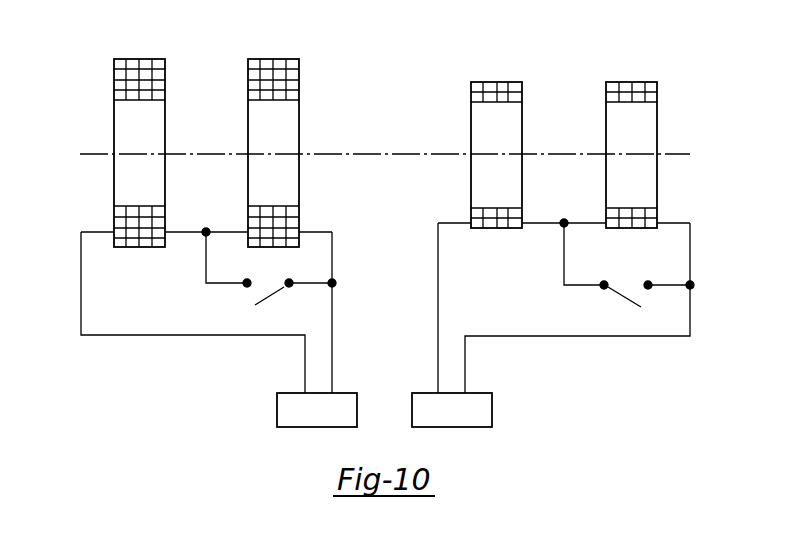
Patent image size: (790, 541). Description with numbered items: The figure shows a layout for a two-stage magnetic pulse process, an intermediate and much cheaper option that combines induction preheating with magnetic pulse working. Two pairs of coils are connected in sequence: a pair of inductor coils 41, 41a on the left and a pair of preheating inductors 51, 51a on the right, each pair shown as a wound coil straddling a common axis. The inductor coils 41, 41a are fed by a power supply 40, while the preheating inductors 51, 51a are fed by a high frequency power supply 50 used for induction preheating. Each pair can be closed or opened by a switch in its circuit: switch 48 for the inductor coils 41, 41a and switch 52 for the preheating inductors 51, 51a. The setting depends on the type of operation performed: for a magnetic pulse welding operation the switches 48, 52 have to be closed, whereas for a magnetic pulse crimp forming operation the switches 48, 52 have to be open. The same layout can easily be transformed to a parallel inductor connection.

The inductor coil 41 is at (133, 64).
The inductor coil 41a is at (267, 64).
The preheating inductor 51 is at (490, 88).
The preheating inductor 51a is at (624, 88).
The switch 48 is at (276, 294).
The switch 52 is at (619, 295).
The power supply 40 is at (327, 420).
The high frequency power supply 50 is at (462, 420).